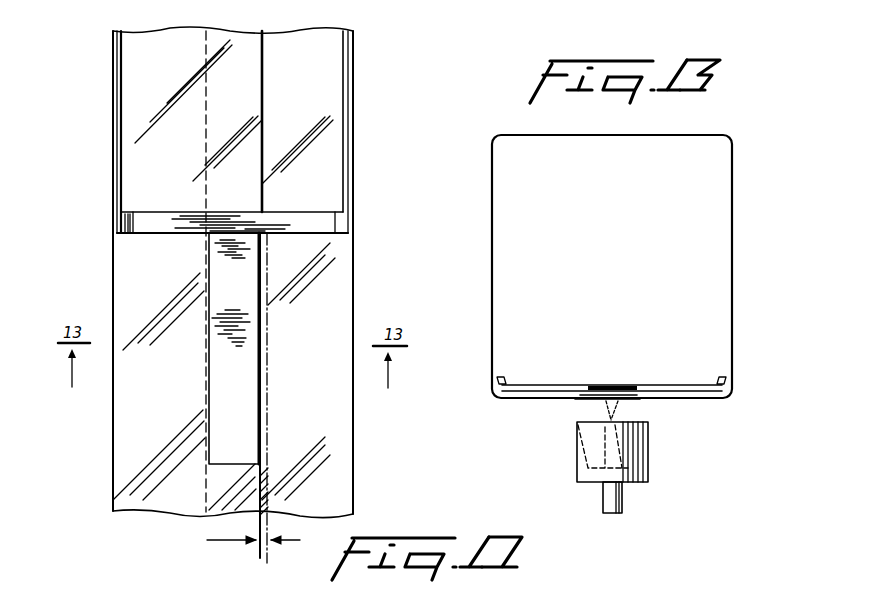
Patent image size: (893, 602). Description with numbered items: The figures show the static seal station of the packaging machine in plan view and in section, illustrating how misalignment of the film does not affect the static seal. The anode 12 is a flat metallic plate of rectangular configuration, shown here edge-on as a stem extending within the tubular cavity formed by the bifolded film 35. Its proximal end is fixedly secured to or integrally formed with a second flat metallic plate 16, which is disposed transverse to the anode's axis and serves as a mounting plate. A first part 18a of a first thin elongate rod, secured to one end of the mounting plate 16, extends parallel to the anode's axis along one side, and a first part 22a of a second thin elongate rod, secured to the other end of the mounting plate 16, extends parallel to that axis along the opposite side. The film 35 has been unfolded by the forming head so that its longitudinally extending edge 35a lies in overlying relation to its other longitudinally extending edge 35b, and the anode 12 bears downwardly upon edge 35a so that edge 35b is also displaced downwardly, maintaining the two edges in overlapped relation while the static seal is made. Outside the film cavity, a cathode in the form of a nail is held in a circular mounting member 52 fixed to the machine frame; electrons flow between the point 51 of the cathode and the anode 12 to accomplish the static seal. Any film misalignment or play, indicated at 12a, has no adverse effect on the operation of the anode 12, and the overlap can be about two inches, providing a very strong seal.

In FIG. 12, the anode 12 is at (247, 357).
In FIG. 13, the anode 12 is at (620, 387).
In FIG. 12, the film misalignment or play 12a is at (260, 546).
In FIG. 12, the second flat metallic plate 16 is at (301, 220).
In FIG. 13, the second flat metallic plate 16 is at (685, 387).
In FIG. 12, the first part of first rod member 18a is at (122, 115).
In FIG. 13, the first part of first rod member 18a is at (498, 377).
In FIG. 12, the first part of second rod member 22a is at (353, 118).
In FIG. 13, the first part of second rod member 22a is at (727, 378).
In FIG. 12, the bifolded film 35 is at (121, 450).
In FIG. 13, the bifolded film 35 is at (683, 136).
In FIG. 12, the longitudinally extending edge of film 35a is at (263, 482).
In FIG. 13, the longitudinally extending edge of film 35a is at (605, 387).
In FIG. 13, the longitudinally extending edge of film 35b is at (583, 402).
In FIG. 13, the point of cathode 51 is at (625, 416).
In FIG. 13, the circular mounting member 52 is at (644, 461).